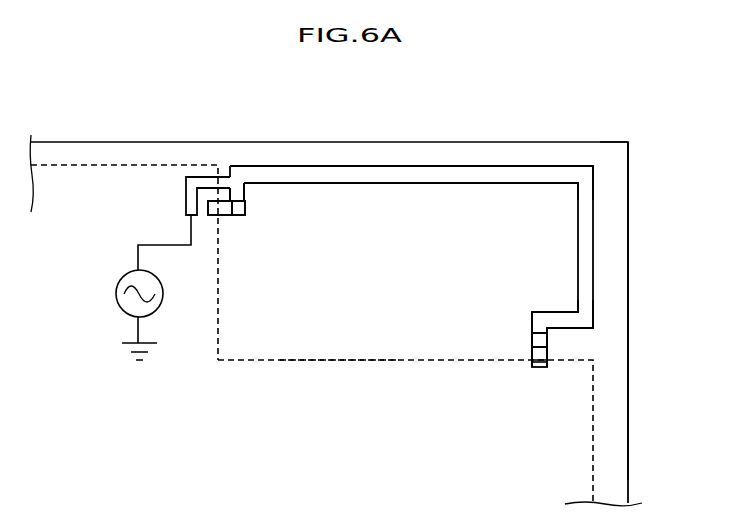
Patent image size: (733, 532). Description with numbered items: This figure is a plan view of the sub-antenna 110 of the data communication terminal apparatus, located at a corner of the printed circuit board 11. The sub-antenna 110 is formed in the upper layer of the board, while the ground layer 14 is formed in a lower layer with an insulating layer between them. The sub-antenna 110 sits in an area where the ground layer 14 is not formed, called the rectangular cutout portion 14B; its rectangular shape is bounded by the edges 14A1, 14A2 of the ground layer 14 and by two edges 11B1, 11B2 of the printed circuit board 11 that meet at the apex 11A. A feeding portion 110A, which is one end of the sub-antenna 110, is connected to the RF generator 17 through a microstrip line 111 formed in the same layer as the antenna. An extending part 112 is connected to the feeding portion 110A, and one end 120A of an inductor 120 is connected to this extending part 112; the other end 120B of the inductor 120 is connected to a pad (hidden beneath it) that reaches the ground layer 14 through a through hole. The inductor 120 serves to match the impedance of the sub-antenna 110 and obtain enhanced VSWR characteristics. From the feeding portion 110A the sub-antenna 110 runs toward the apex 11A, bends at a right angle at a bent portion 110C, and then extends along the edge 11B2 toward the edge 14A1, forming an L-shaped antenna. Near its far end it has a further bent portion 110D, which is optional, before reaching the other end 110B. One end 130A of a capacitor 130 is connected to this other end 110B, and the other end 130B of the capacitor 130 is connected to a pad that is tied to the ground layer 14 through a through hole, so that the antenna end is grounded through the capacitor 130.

The printed circuit board 11 is at (612, 243).
The apex 11A is at (628, 142).
The edge 11B1 is at (343, 142).
The edge 11B2 is at (630, 293).
The ground layer 14 is at (577, 440).
The edge 14A1 is at (363, 360).
The edge 14A2 is at (215, 327).
The rectangular cutout portion 14B is at (307, 325).
The RF generator 17 is at (115, 293).
The sub-antenna 110 is at (446, 175).
The feeding portion 110A is at (237, 170).
The other end 110B is at (538, 318).
The bent portion 110C is at (585, 175).
The bent portion 110D is at (562, 312).
The microstrip line 111 is at (185, 195).
The extending part 112 is at (247, 192).
The inductor 120 is at (221, 217).
The one end 120A is at (232, 217).
The other end 120B is at (213, 217).
The capacitor 130 is at (548, 348).
The one end 130A is at (535, 338).
The other end 130B is at (535, 362).